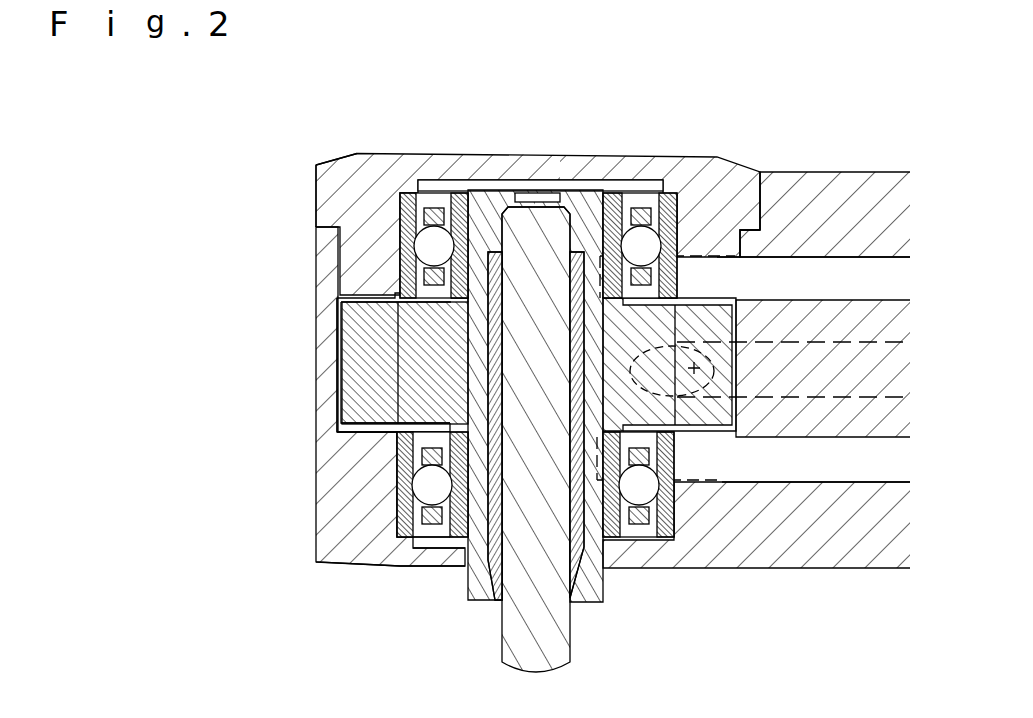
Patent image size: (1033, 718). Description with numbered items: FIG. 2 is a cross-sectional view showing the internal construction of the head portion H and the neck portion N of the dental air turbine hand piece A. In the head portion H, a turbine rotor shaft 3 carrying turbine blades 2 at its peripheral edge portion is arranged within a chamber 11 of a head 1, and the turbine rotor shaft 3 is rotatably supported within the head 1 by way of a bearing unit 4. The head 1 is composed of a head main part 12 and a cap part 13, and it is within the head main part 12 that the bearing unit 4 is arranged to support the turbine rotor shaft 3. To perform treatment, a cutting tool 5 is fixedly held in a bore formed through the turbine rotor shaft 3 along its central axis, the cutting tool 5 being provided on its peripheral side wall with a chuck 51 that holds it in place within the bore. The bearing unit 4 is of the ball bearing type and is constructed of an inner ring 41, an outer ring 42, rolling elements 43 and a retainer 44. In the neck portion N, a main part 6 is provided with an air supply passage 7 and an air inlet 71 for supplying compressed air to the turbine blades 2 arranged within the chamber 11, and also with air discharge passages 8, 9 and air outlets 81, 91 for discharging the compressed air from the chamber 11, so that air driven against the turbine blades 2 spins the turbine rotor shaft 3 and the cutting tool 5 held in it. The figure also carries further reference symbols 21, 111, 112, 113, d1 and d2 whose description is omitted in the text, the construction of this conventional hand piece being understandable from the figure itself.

The head 1 is at (316, 150).
The turbine blades 2 is at (378, 335).
The stator sleeve 21 is at (397, 307).
The cap part 13 is at (328, 192).
The head main part 12 is at (328, 258).
The frame side wall 111 is at (338, 287).
The chamber 11 is at (340, 297).
The magnet 113 is at (337, 373).
The frame bottom wall 112 is at (343, 432).
The bearing unit 4 is at (360, 560).
The outer ring 42 is at (390, 527).
The rolling elements 43 is at (405, 540).
The retainer 44 is at (435, 528).
The inner ring 41 is at (455, 562).
The turbine rotor shaft 3 is at (476, 594).
The cutting tool 5 is at (558, 648).
The chuck 51 is at (580, 597).
The air inlet 71 is at (690, 372).
The air outlet 91 is at (733, 460).
The main part of the neck portion 6 is at (863, 195).
The air supply passage 7 is at (865, 365).
The air discharge passage 8 is at (862, 280).
The air discharge passage 9 is at (862, 461).
The air outlet 81 is at (735, 278).
The head portion H is at (665, 150).
The dental air turbine hand piece A is at (736, 142).
The neck portion N is at (830, 162).
The gap d1 is at (338, 321).
The gap d2 is at (340, 400).